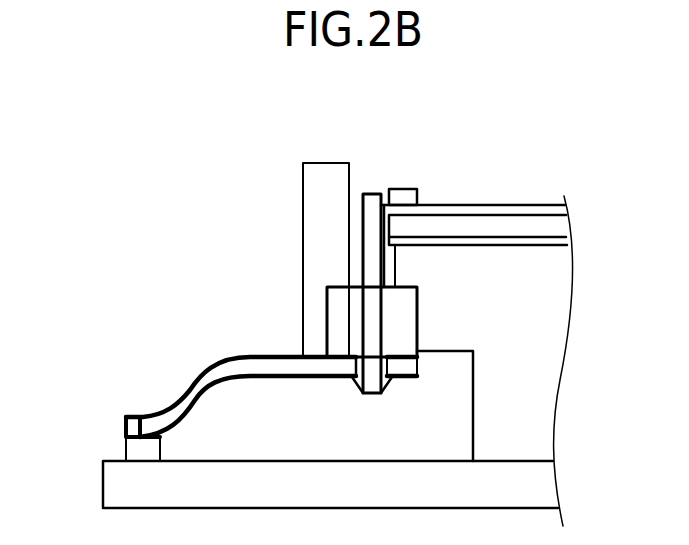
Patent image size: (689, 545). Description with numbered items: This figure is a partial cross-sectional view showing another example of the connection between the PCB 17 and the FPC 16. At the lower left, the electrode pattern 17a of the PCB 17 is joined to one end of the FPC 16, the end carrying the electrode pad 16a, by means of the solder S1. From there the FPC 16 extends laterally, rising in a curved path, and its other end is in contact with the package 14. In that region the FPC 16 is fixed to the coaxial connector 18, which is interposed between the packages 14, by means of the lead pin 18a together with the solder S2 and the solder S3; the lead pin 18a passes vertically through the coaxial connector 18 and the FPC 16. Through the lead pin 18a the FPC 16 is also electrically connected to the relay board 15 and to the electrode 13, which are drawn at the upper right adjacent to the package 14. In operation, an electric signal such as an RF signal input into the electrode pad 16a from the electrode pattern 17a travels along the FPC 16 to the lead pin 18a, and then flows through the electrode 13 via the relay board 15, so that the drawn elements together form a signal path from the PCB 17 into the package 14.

The electrode 13 is at (548, 203).
The package 14 is at (302, 227).
The relay board 15 is at (453, 226).
The FPC 16 is at (200, 383).
The electrode pad 16a is at (140, 434).
The PCB 17 is at (125, 487).
The electrode pattern 17a is at (122, 460).
The coaxial connector 18 is at (340, 327).
The lead pin 18a is at (376, 204).
The solder S1 is at (125, 457).
The solder S2 is at (354, 384).
The solder S3 is at (402, 197).